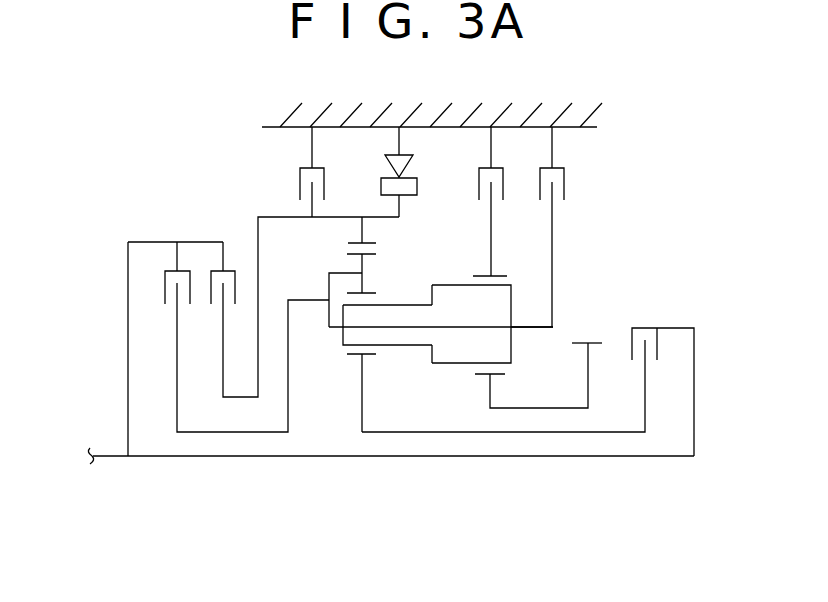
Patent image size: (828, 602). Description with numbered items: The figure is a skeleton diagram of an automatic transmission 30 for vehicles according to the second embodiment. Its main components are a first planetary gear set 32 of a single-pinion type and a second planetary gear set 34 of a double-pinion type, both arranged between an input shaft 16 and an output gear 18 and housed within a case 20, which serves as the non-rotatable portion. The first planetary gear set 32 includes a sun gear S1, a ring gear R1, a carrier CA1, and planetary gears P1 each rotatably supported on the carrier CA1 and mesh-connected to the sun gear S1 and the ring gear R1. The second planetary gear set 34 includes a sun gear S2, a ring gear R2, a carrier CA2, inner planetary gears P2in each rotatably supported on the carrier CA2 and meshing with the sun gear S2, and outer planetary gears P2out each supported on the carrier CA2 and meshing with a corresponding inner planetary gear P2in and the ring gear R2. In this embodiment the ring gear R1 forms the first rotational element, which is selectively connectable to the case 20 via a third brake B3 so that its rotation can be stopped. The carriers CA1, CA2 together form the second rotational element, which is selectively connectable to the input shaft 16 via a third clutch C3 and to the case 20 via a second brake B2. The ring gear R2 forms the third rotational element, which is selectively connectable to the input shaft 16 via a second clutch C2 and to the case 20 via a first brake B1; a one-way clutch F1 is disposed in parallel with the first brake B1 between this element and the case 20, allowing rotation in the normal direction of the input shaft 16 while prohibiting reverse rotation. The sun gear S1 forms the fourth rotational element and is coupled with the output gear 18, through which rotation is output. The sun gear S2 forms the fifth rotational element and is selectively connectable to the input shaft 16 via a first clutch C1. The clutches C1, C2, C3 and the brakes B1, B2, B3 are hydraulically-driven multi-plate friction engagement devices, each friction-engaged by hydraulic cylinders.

The input shaft 16 is at (108, 457).
The output gear 18 is at (590, 343).
The case 20 is at (300, 104).
The automatic transmission 30 is at (166, 99).
The first planetary gear set 32 is at (473, 470).
The second planetary gear set 34 is at (375, 470).
The first brake B1 is at (312, 146).
The second brake B2 is at (552, 201).
The third brake B3 is at (490, 175).
The one-way clutch F1 is at (399, 146).
The first clutch C1 is at (528, 376).
The second clutch C2 is at (303, 306).
The third clutch C3 is at (228, 335).
The ring gear R1 is at (480, 275).
The planetary gear P1 is at (511, 284).
The sun gear S1 is at (478, 376).
The carrier CA1 is at (535, 329).
The ring gear R2 is at (376, 243).
The outer planetary gear P2out is at (347, 258).
The inner planetary gear P2in is at (400, 347).
The sun gear S2 is at (358, 357).
The carrier CA2 is at (329, 298).